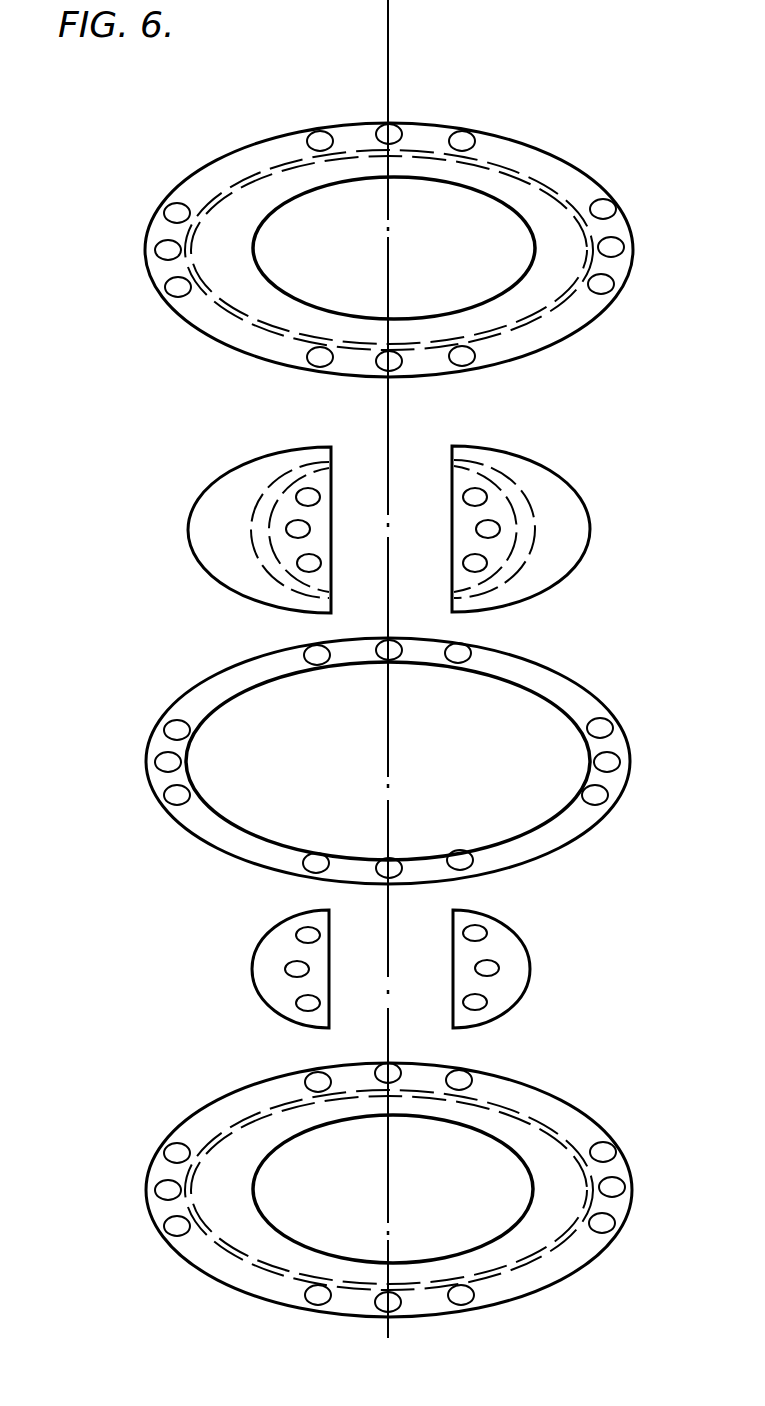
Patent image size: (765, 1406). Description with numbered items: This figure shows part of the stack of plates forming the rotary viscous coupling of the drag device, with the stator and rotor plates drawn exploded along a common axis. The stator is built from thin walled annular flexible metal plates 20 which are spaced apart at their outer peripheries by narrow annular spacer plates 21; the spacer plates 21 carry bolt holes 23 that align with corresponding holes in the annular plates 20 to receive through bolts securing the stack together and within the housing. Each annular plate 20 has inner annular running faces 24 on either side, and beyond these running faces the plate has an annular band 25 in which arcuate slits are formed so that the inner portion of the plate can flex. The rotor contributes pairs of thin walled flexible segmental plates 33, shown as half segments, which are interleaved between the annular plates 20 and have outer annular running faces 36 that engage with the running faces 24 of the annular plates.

The annular flexible metal plate 20 is at (371, 250).
The annular spacer plate 21 is at (403, 761).
The bolt hole 23 is at (543, 835).
The inner annular running face 24 is at (237, 238).
The annular band 25 is at (252, 328).
The segmental plate 33 is at (421, 502).
The outer annular running face 36 is at (572, 534).